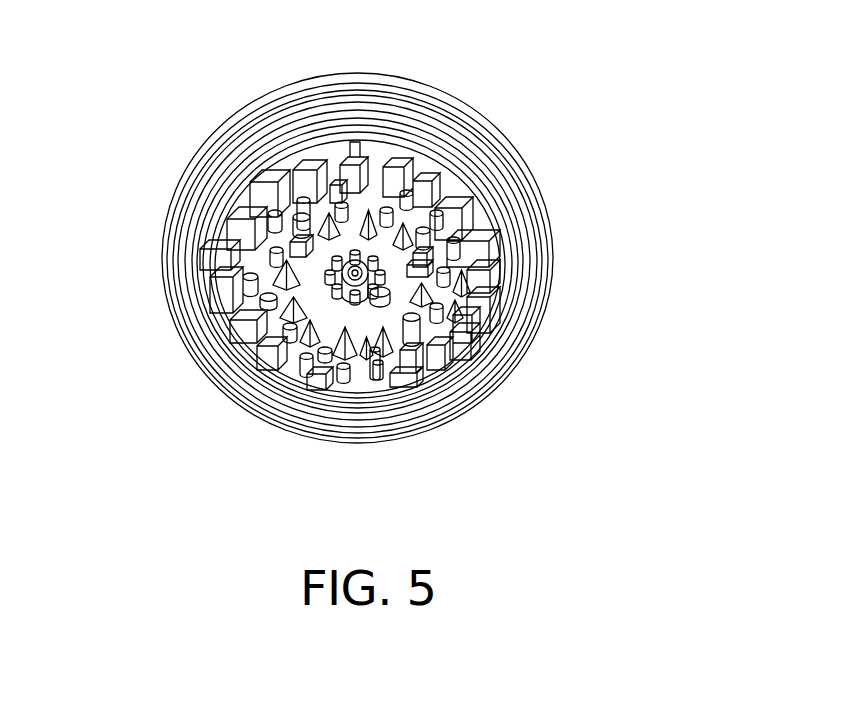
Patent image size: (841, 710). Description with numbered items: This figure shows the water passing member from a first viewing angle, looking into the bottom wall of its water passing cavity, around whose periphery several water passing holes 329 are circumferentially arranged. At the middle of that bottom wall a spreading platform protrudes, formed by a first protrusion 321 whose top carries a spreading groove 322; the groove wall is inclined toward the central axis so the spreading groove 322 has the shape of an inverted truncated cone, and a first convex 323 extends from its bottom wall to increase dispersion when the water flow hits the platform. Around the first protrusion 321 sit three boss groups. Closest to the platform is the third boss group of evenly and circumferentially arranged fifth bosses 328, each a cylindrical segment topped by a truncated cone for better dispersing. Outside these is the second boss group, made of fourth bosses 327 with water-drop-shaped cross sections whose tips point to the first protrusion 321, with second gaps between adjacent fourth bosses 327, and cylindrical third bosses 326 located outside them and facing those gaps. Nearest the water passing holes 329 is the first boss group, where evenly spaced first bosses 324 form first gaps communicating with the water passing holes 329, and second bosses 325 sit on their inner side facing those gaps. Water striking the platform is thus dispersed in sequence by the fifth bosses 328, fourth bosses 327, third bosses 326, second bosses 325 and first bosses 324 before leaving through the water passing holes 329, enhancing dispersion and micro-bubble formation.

The first protrusion 321 is at (357, 273).
The spreading groove 322 is at (350, 266).
The first convex 323 is at (363, 279).
The first boss 324 is at (247, 223).
The second boss 325 is at (256, 248).
The third boss 326 is at (273, 288).
The fourth boss 327 is at (310, 331).
The fifth boss 328 is at (357, 313).
The water passing hole 329 is at (490, 307).